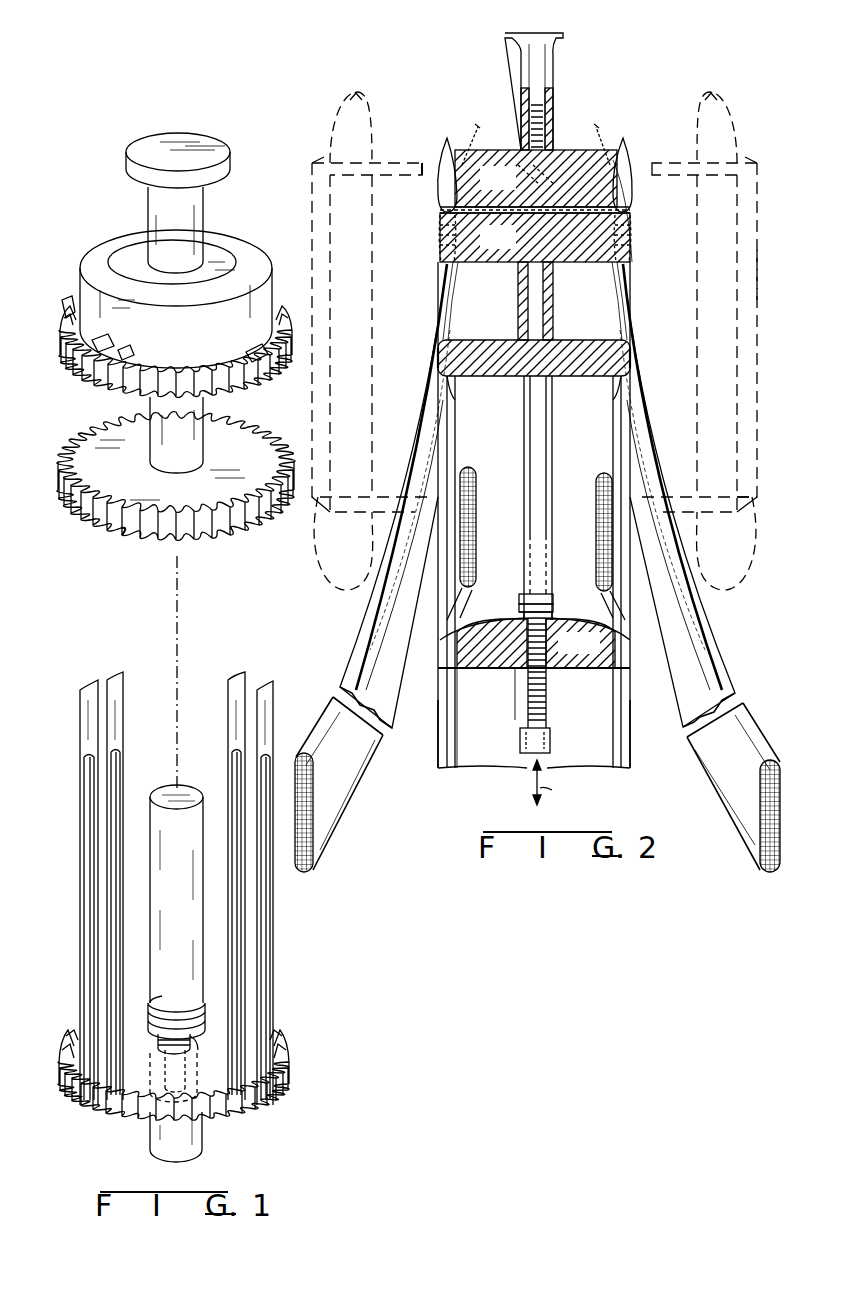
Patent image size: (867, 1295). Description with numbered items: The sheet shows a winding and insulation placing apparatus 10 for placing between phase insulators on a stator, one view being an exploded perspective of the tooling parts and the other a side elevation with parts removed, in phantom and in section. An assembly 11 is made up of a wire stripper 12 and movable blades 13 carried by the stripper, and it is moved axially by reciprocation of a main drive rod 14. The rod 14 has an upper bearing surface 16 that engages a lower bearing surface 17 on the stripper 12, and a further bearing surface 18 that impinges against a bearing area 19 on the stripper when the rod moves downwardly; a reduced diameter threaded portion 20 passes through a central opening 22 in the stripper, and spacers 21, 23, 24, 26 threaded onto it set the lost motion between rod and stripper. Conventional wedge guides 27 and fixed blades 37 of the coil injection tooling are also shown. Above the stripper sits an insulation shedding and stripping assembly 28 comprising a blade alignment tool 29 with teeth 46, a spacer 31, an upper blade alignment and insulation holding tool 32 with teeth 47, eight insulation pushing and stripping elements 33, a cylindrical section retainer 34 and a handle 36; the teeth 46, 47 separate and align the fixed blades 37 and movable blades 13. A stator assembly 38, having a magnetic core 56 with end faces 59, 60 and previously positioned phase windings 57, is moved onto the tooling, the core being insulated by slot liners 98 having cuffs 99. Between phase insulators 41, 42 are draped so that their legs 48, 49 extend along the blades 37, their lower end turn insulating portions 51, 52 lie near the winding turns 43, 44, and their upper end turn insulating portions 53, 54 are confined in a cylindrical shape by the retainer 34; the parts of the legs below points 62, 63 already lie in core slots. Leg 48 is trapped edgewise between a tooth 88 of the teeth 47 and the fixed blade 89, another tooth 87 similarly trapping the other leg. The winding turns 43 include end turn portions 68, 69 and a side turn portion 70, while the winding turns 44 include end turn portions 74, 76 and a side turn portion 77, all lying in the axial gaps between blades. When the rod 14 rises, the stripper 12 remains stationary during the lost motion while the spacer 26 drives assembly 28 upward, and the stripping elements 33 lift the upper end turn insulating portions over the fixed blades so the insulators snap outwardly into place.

In FIG. 1, the winding and insulation placing apparatus 10 is at (302, 1088).
In FIG. 2, the winding and insulation placing apparatus 10 is at (600, 88).
In FIG. 1, the assembly 11 is at (90, 1118).
In FIG. 1, the wire stripper 12 is at (288, 1054).
In FIG. 2, the wire stripper 12 is at (534, 629).
In FIG. 1, the movable blades 13 is at (112, 720).
In FIG. 1, the main drive rod 14 is at (202, 1150).
In FIG. 2, the main drive rod 14 is at (522, 753).
In FIG. 2, the upper bearing surface 16 is at (522, 738).
In FIG. 2, the lower bearing surface 17 is at (522, 670).
In FIG. 1, the upper bearing surface 18 is at (160, 1036).
In FIG. 2, the upper bearing surface 18 is at (524, 617).
In FIG. 1, the bearing area 19 is at (198, 1042).
In FIG. 2, the bearing area 19 is at (486, 672).
In FIG. 1, the threaded portion 20 is at (168, 1052).
In FIG. 2, the threaded portion 20 is at (547, 692).
In FIG. 1, the spacer 21 is at (200, 1053).
In FIG. 2, the spacer 21 is at (553, 610).
In FIG. 2, the central opening 22 is at (580, 612).
In FIG. 1, the spacer 23 is at (158, 1005).
In FIG. 2, the spacer 23 is at (521, 608).
In FIG. 1, the spacer 24 is at (190, 1006).
In FIG. 2, the spacer 24 is at (548, 598).
In FIG. 1, the spacer 26 is at (190, 908).
In FIG. 2, the spacer 26 is at (553, 436).
In FIG. 2, the wedge guides 27 is at (425, 772).
In FIG. 1, the assembly 28 is at (72, 268).
In FIG. 1, the blade alignment tool 29 is at (90, 445).
In FIG. 2, the blade alignment tool 29 is at (529, 335).
In FIG. 1, the spacer 31 is at (152, 412).
In FIG. 2, the spacer 31 is at (556, 306).
In FIG. 1, the upper blade alignment and insulation holding tool 32 is at (66, 340).
In FIG. 2, the upper blade alignment and insulation holding tool 32 is at (512, 249).
In FIG. 1, the insulation pushing and stripping elements 33 is at (120, 355).
In FIG. 2, the insulation pushing and stripping elements 33 is at (446, 210).
In FIG. 1, the cylindrical section retainer 34 is at (110, 270).
In FIG. 2, the cylindrical section retainer 34 is at (512, 190).
In FIG. 1, the handle 36 is at (150, 208).
In FIG. 2, the handle 36 is at (560, 50).
In FIG. 2, the fixed blades 37 is at (449, 160).
In FIG. 2, the stator assembly 38 is at (523, 337).
In FIG. 2, the between phase insulator 41 is at (630, 346).
In FIG. 2, the between phase insulator 42 is at (440, 344).
In FIG. 2, the winding turns 43 is at (700, 568).
In FIG. 2, the winding turns 44 is at (372, 568).
In FIG. 1, the teeth 46 is at (120, 536).
In FIG. 1, the teeth 47 is at (68, 312).
In FIG. 2, the leg 48 is at (656, 412).
In FIG. 2, the leg 49 is at (426, 420).
In FIG. 2, the end turn insulating portion 51 is at (690, 608).
In FIG. 2, the end turn insulating portion 52 is at (380, 585).
In FIG. 2, the end turn insulating portion 53 is at (583, 165).
In FIG. 2, the end turn insulating portion 54 is at (478, 125).
In FIG. 2, the magnetic core 56 is at (760, 296).
In FIG. 2, the phase windings 57 is at (352, 92).
In FIG. 2, the end face 59 is at (424, 163).
In FIG. 2, the end face 60 is at (746, 505).
In FIG. 2, the point 62 is at (628, 310).
In FIG. 2, the point 63 is at (446, 310).
In FIG. 2, the first end turn portion 68 is at (603, 474).
In FIG. 2, the second end turn portion 69 is at (760, 850).
In FIG. 2, the first side turn portion 70 is at (692, 674).
In FIG. 2, the first end turn portion 74 is at (466, 468).
In FIG. 2, the second end turn portion 76 is at (313, 855).
In FIG. 2, the side turn portion 77 is at (392, 682).
In FIG. 2, the tooth 87 is at (448, 378).
In FIG. 2, the tooth 88 is at (632, 226).
In FIG. 2, the fixed blade 89 is at (620, 160).
In FIG. 2, the slot liners 98 is at (380, 150).
In FIG. 2, the cuffs 99 is at (311, 164).